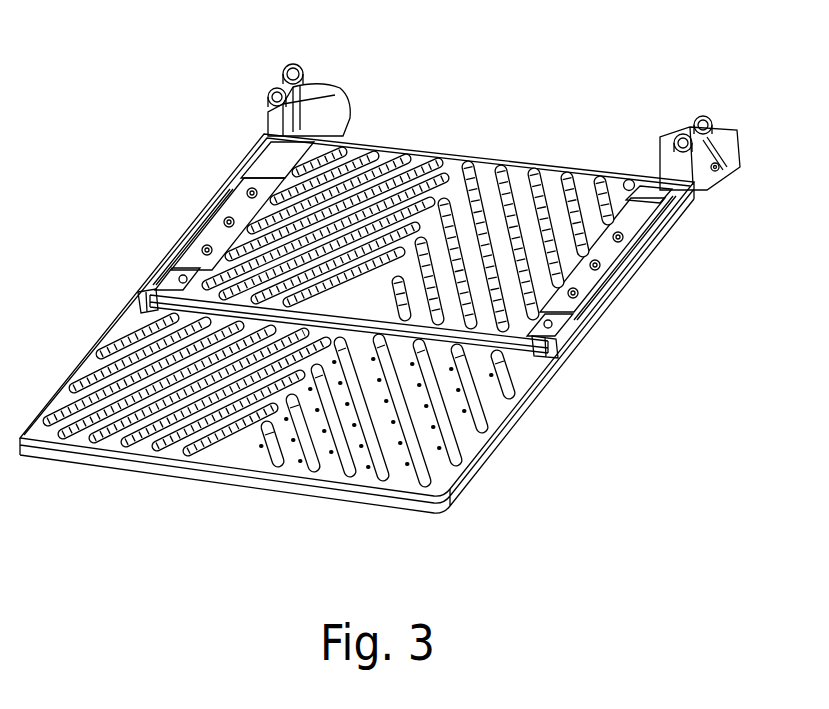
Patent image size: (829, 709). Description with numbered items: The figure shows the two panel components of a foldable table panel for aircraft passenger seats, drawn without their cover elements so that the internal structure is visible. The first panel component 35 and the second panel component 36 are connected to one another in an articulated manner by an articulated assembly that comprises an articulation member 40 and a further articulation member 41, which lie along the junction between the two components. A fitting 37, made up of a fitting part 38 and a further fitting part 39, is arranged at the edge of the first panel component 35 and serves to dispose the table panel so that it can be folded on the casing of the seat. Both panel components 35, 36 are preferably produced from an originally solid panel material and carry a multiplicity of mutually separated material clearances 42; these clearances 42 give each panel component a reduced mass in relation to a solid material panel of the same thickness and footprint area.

The first panel component 35 is at (630, 291).
The second panel component 36 is at (515, 436).
The fitting 37 is at (723, 113).
The fitting part 38 is at (685, 123).
The further fitting part 39 is at (317, 68).
The articulation member 40 is at (559, 340).
The further articulation member 41 is at (140, 296).
The material clearances 42 is at (458, 158).